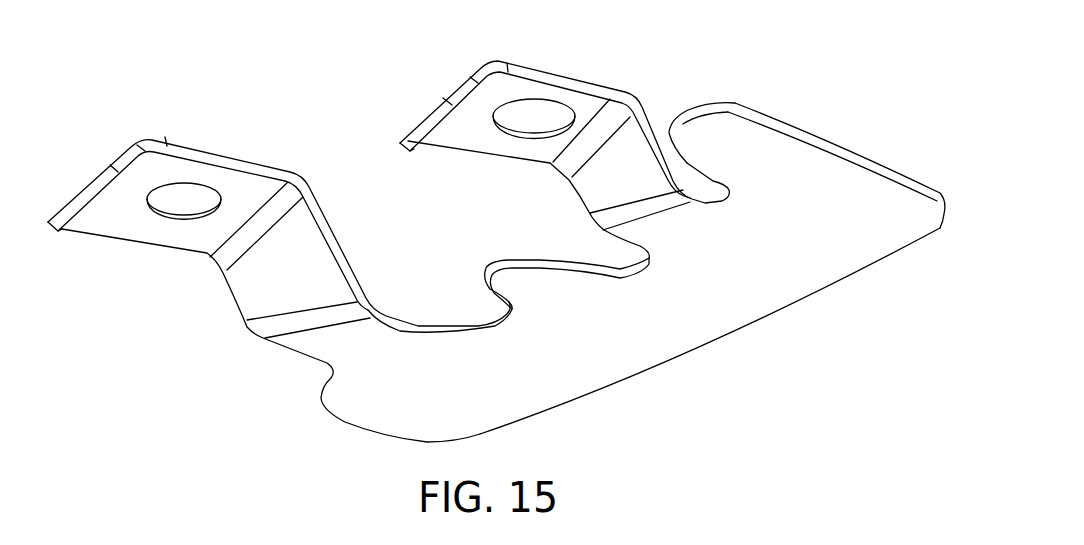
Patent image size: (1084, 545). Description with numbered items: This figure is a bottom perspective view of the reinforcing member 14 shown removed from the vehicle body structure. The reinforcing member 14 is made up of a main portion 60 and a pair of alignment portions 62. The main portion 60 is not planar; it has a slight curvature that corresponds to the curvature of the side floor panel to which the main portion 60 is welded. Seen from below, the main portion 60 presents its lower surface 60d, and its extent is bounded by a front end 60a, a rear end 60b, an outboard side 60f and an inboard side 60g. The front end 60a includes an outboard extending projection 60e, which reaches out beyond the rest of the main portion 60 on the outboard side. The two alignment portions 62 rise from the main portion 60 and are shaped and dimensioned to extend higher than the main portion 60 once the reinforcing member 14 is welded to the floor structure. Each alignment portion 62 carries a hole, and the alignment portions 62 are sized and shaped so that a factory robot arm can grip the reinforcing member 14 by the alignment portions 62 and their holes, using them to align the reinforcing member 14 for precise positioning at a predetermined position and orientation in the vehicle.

The reinforcing member 14 is at (208, 82).
The alignment portions 62 is at (228, 153).
The main portion 60 is at (613, 332).
The front end 60a is at (870, 157).
The rear end 60b is at (360, 427).
The lower surface 60d is at (828, 252).
The outboard extending projection 60e is at (712, 102).
The outboard side 60f is at (487, 267).
The inboard side 60g is at (720, 340).